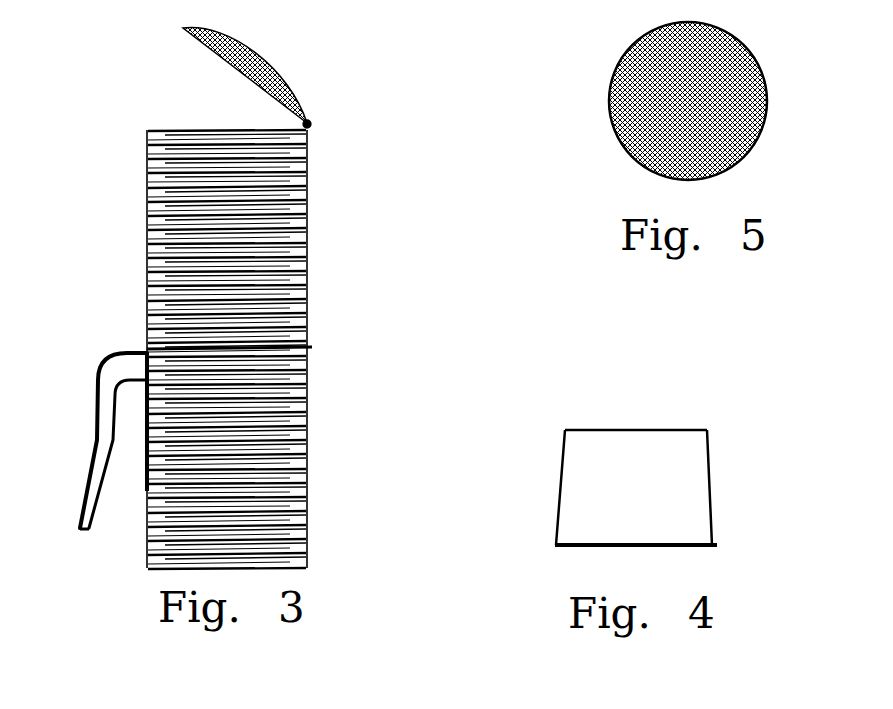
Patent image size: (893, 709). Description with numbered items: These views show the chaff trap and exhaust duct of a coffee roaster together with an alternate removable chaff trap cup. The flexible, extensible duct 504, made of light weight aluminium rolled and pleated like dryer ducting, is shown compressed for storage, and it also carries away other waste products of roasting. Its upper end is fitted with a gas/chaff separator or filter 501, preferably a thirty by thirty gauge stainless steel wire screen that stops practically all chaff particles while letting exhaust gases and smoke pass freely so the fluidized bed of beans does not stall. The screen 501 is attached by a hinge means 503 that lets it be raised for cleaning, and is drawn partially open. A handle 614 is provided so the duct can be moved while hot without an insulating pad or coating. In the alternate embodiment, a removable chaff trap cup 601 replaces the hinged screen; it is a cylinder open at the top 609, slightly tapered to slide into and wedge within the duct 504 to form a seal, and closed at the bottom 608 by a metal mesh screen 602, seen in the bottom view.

In FIG. 3, the gas/chaff separator or filter 501 is at (203, 47).
In FIG. 3, the hinge means 503 is at (313, 125).
In FIG. 3, the flexible, extensible duct 504 is at (308, 360).
In FIG. 3, the handle 614 is at (97, 380).
In FIG. 4, the removable chaff trap cup 601 is at (712, 495).
In FIG. 4, the bottom 608 is at (555, 545).
In FIG. 4, the top 609 is at (617, 428).
In FIG. 5, the metal mesh screen 602 is at (657, 72).